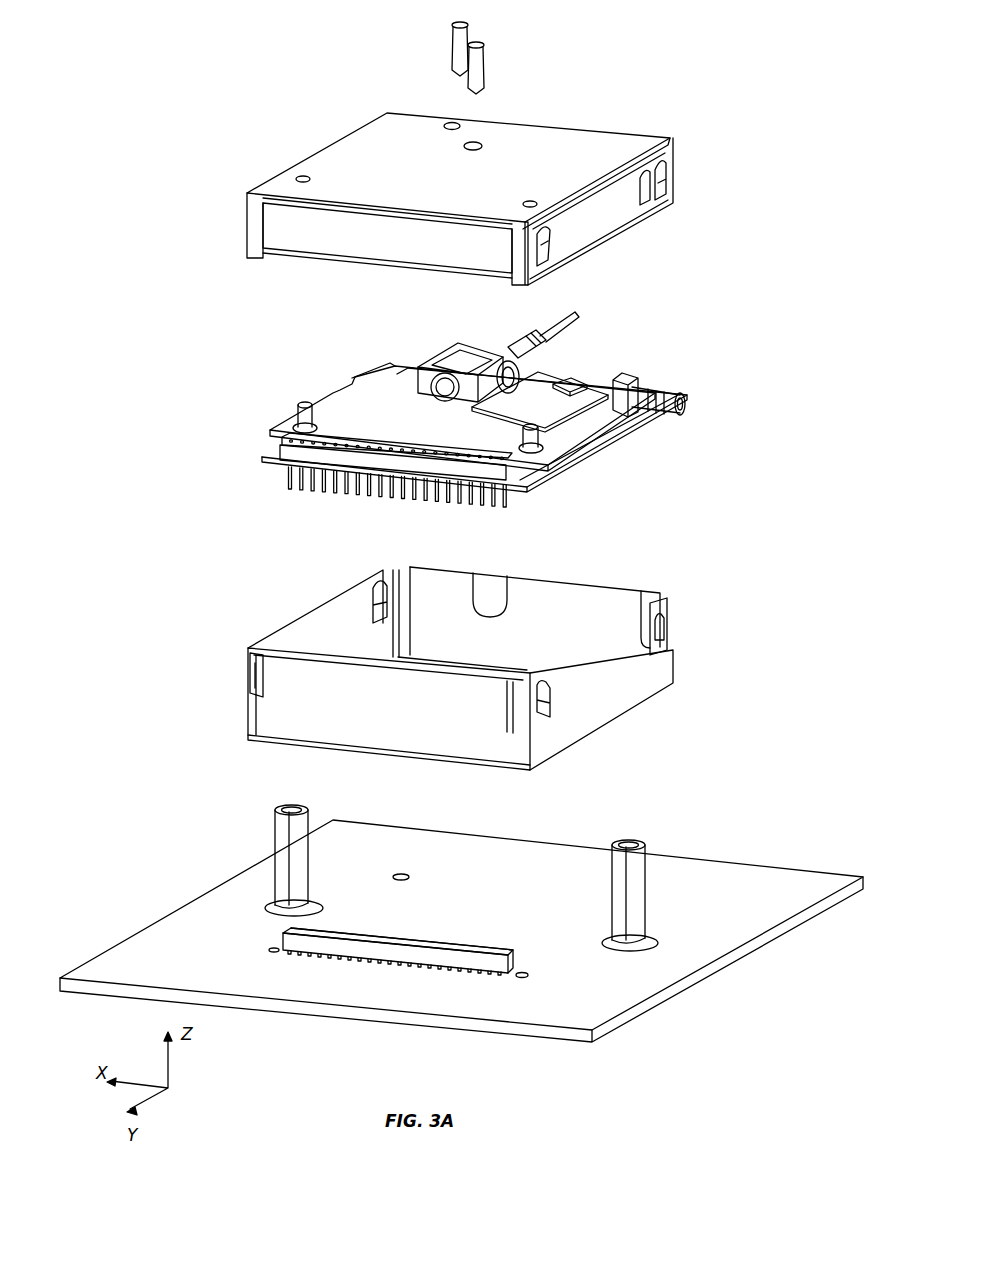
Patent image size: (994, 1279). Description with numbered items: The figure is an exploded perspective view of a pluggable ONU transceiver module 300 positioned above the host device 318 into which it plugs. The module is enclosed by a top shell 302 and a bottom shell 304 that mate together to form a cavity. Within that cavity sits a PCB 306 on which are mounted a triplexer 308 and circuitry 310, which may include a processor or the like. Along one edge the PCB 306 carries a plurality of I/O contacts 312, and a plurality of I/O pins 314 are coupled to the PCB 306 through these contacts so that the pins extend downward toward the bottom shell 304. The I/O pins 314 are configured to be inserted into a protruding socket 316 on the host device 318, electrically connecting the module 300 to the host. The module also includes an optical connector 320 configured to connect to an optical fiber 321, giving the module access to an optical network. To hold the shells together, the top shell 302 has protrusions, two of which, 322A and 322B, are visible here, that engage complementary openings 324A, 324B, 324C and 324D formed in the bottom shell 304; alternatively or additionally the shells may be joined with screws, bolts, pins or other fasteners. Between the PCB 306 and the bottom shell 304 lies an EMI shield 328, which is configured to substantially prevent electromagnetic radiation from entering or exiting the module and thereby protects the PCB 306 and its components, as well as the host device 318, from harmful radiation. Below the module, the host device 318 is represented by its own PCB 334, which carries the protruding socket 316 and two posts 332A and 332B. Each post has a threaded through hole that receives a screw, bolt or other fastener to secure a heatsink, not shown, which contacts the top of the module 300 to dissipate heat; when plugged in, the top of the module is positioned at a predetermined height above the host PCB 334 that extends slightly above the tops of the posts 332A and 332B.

The pluggable ONU transceiver module 300 is at (748, 13).
The top shell 302 is at (350, 157).
The bottom shell 304 is at (660, 683).
The PCB 306 is at (327, 413).
The triplexer 308 is at (455, 352).
The circuitry 310 is at (560, 378).
The I/O contacts 312 is at (425, 437).
The I/O pins 314 is at (517, 507).
The protruding socket 316 is at (514, 965).
The host device 318 is at (287, 793).
The optical connector 320 is at (517, 340).
The optical fiber 321 is at (562, 313).
The protrusion 322A is at (552, 240).
The protrusion 322B is at (668, 176).
The opening 324A is at (549, 700).
The opening 324B is at (664, 630).
The opening 324C is at (375, 605).
The opening 324D is at (256, 675).
The EMI shield 328 is at (610, 443).
The post 332A is at (270, 833).
The post 332B is at (637, 878).
The PCB of the host device 334 is at (770, 880).